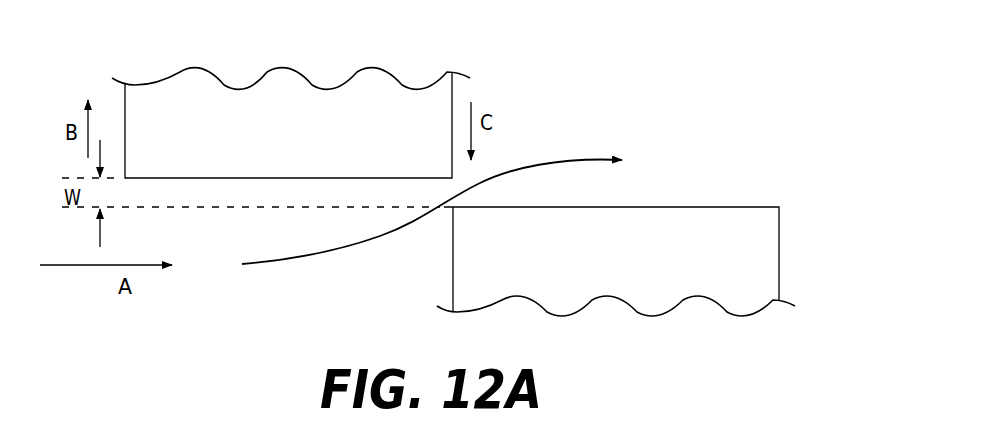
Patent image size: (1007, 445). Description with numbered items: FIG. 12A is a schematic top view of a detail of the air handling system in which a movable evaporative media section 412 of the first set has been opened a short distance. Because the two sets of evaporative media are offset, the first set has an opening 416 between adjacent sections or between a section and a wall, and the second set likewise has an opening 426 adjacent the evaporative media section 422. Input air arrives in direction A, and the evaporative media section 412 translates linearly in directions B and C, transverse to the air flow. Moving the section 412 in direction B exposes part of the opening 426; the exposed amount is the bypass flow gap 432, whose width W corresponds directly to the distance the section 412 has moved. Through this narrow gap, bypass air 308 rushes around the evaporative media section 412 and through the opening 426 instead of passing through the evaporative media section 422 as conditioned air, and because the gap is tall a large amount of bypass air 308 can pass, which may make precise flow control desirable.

The bypass air 308 is at (262, 265).
The evaporative media section 412 is at (133, 103).
The opening 416 is at (216, 293).
The evaporative media section 422 is at (773, 278).
The opening 426 is at (637, 57).
The bypass flow gap 432 is at (475, 198).